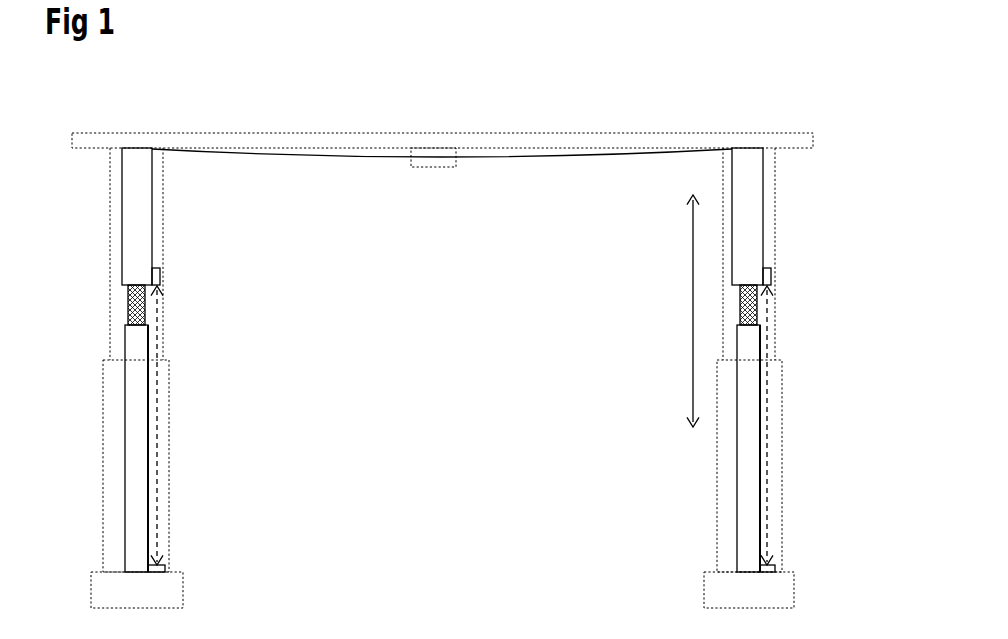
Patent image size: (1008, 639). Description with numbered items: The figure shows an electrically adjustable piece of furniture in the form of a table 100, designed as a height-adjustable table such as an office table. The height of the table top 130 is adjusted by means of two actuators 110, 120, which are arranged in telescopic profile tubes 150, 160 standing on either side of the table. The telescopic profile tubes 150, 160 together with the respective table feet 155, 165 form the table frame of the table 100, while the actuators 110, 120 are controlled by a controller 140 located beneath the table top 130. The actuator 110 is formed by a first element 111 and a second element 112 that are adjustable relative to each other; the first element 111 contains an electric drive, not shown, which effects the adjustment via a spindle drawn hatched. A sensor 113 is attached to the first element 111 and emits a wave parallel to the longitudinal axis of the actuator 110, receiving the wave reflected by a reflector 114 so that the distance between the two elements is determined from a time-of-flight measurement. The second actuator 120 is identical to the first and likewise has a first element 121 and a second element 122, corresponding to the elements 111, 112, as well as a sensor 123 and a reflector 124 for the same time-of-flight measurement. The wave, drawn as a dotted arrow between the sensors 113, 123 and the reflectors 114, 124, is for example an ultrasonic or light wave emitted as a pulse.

The table 100 is at (130, 103).
The actuator 110 is at (163, 194).
The first element 111 is at (155, 218).
The second element 112 is at (147, 457).
The sensor 113 is at (160, 277).
The reflector 114 is at (165, 568).
The second actuator 120 is at (778, 185).
The first element 121 is at (763, 218).
The second element 122 is at (760, 458).
The sensor 123 is at (773, 278).
The reflector 124 is at (775, 568).
The table top 130 is at (442, 133).
The controller 140 is at (432, 167).
The telescopic profile tube 150 is at (168, 388).
The table foot 155 is at (183, 590).
The telescopic profile tube 160 is at (778, 388).
The table foot 165 is at (704, 590).